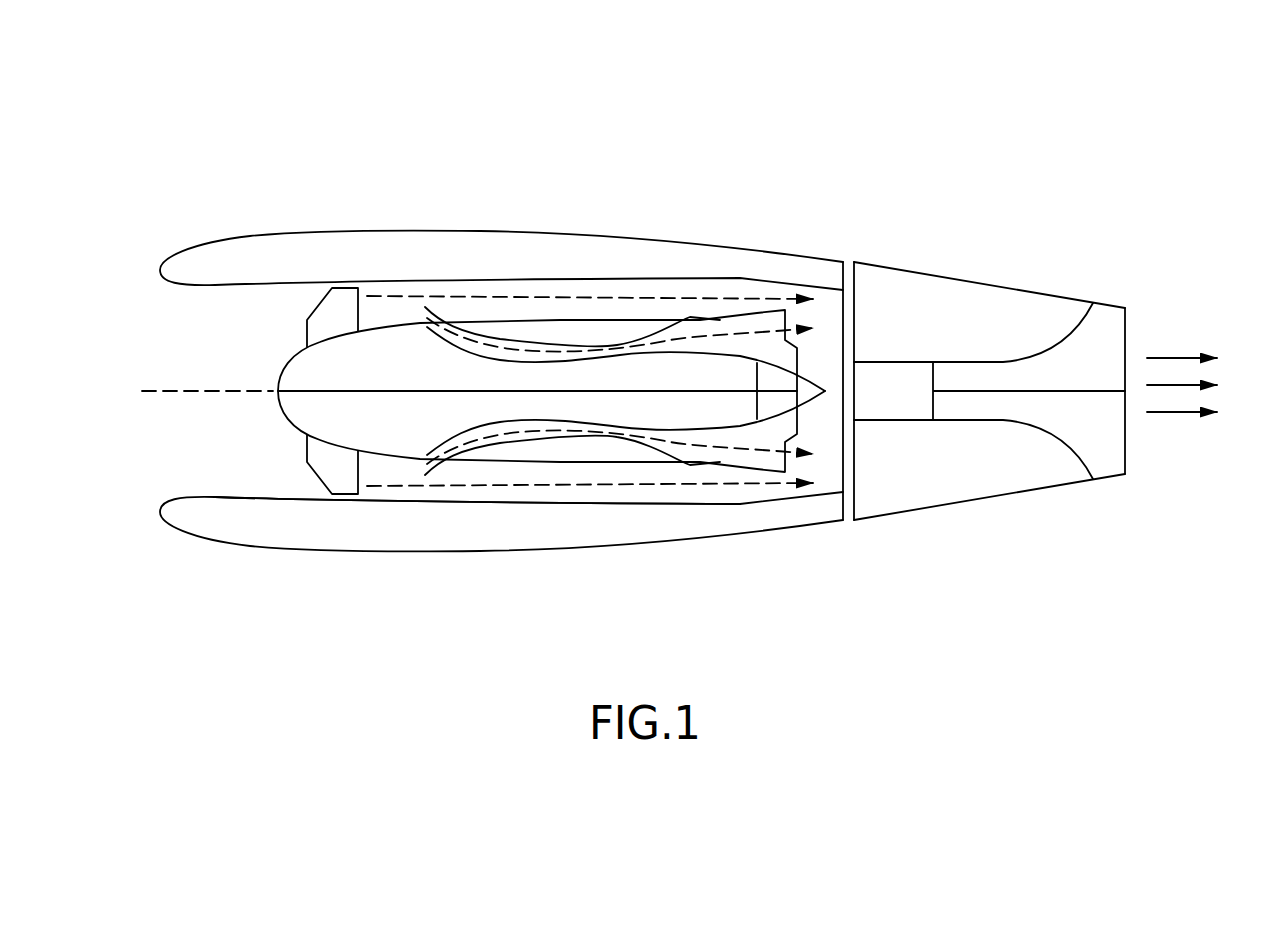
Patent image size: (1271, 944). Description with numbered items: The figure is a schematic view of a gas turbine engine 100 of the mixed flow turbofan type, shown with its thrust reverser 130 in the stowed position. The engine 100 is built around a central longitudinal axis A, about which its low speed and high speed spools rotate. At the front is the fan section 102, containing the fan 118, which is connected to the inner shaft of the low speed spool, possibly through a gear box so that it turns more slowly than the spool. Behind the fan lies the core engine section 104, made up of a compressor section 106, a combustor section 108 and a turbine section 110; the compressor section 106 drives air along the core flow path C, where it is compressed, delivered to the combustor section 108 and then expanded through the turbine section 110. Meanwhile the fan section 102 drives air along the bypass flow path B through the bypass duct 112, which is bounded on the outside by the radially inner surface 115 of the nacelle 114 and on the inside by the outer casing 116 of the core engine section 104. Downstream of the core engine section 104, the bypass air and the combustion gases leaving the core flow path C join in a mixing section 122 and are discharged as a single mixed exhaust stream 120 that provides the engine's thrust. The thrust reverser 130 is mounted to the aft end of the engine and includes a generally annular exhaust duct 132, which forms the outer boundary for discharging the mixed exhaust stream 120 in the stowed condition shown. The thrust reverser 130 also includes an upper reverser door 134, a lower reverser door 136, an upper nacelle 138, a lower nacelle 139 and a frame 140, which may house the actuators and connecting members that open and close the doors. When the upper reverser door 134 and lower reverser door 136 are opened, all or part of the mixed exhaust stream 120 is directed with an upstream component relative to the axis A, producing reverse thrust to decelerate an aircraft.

The gas turbine engine 100 is at (177, 170).
The fan section 102 is at (283, 318).
The core engine section 104 is at (458, 383).
The compressor section 106 is at (485, 330).
The combustor section 108 is at (612, 335).
The turbine section 110 is at (723, 310).
The bypass duct 112 is at (487, 475).
The nacelle 114 is at (295, 530).
The radially inner surface 115 is at (550, 502).
The outer casing 116 is at (605, 462).
The fan 118 is at (315, 473).
The mixed exhaust stream 120 is at (1177, 358).
The mixing section 122 is at (825, 328).
The thrust reverser 130 is at (970, 228).
The exhaust duct 132 is at (1128, 452).
The upper reverser door 134 is at (1000, 288).
The lower reverser door 136 is at (947, 503).
The upper nacelle 138 is at (1105, 308).
The lower nacelle 139 is at (1100, 465).
The frame 140 is at (900, 387).
The central longitudinal axis A is at (172, 392).
The bypass flow path B is at (418, 487).
The core flow path C is at (752, 445).